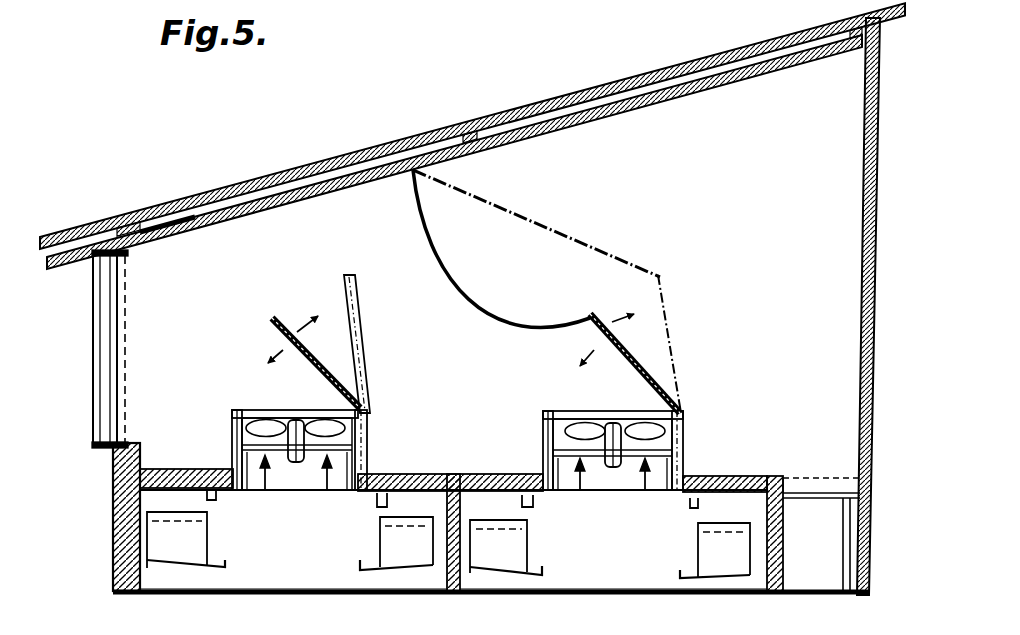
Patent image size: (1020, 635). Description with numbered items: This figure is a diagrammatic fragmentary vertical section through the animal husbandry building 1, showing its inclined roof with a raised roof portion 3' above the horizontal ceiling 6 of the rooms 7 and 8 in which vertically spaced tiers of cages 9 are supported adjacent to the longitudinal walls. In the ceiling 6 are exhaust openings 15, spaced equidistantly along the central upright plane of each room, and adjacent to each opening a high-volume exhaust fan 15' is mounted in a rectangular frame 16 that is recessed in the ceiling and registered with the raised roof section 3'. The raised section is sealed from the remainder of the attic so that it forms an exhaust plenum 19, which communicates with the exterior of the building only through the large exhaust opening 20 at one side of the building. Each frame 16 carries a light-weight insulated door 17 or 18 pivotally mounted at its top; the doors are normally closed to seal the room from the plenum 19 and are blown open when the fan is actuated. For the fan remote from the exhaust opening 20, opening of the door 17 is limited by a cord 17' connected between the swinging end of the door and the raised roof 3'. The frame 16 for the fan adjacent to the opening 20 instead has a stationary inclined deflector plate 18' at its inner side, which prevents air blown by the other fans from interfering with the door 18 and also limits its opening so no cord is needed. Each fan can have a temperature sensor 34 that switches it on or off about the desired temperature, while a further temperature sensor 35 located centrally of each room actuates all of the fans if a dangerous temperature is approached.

The closed building 1 is at (108, 542).
The raised roof portion 3' is at (477, 97).
The ceiling 6 is at (175, 468).
The room 7 is at (292, 570).
The room 8 is at (612, 570).
The cages 9 is at (540, 572).
The exhaust opening 15 is at (336, 521).
The exhaust fan 15' is at (292, 495).
The rectangular frame 16 is at (360, 443).
The door 17 is at (577, 291).
The cord 17' is at (501, 249).
The door 18 is at (312, 327).
The deflector plate 18' is at (391, 344).
The exhaust plenum 19 is at (612, 140).
The exhaust opening 20 is at (97, 410).
The temperature sensor 34 is at (214, 502).
The temperature sensor 35 is at (380, 505).